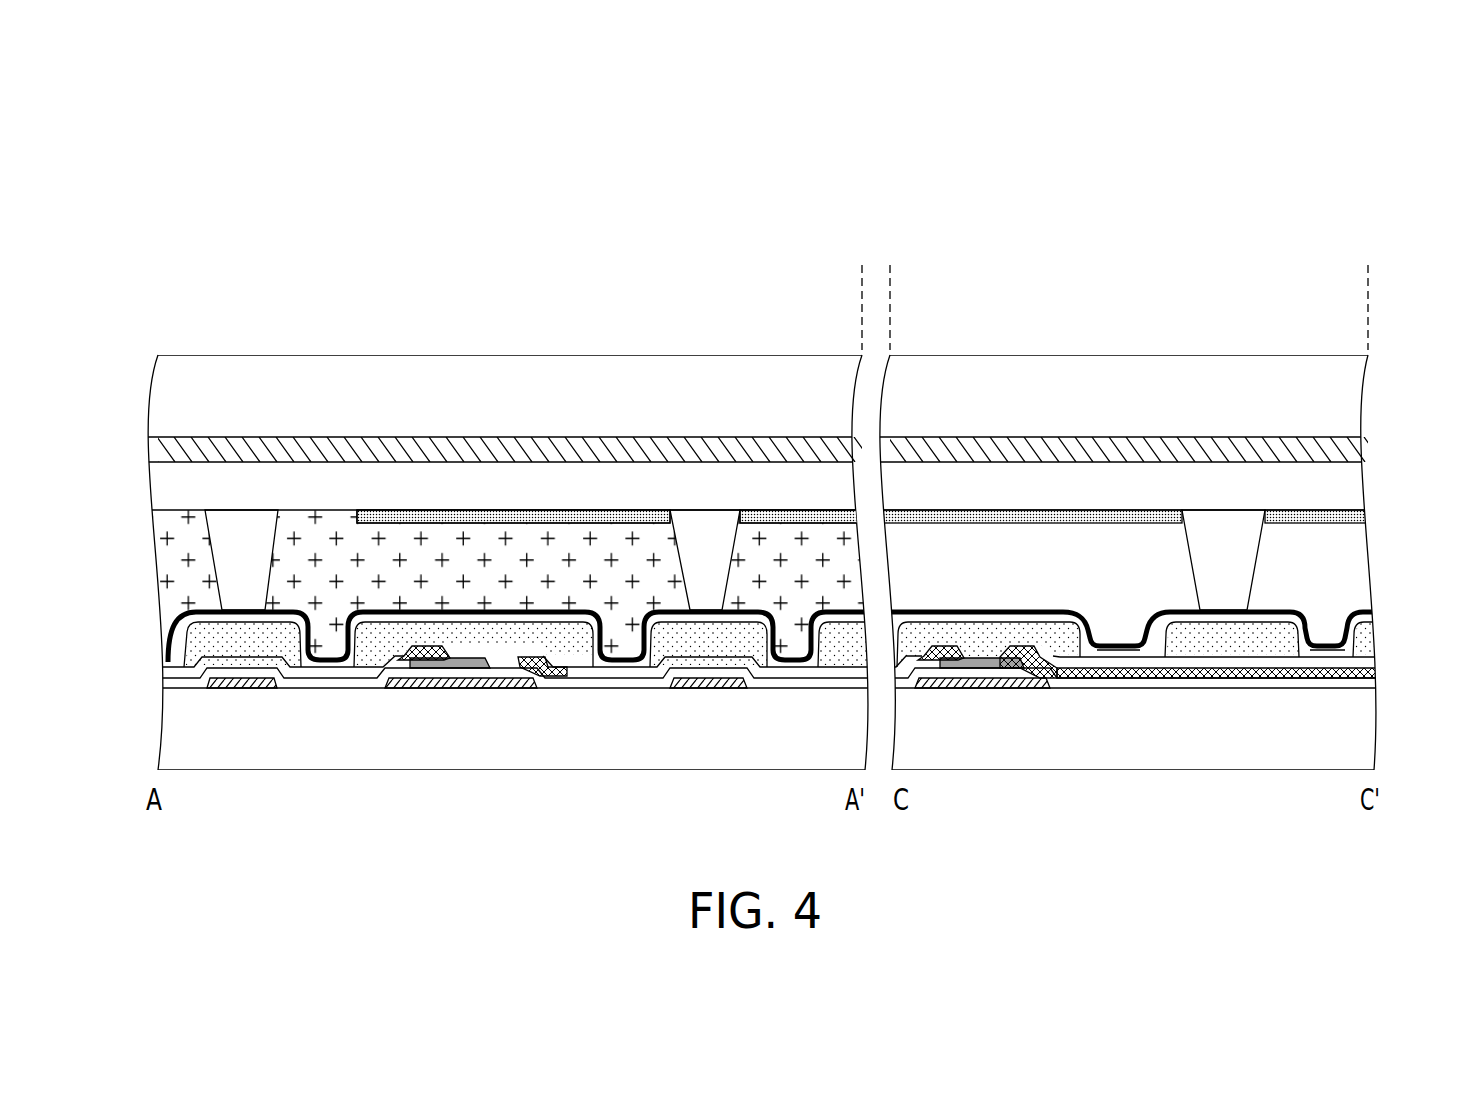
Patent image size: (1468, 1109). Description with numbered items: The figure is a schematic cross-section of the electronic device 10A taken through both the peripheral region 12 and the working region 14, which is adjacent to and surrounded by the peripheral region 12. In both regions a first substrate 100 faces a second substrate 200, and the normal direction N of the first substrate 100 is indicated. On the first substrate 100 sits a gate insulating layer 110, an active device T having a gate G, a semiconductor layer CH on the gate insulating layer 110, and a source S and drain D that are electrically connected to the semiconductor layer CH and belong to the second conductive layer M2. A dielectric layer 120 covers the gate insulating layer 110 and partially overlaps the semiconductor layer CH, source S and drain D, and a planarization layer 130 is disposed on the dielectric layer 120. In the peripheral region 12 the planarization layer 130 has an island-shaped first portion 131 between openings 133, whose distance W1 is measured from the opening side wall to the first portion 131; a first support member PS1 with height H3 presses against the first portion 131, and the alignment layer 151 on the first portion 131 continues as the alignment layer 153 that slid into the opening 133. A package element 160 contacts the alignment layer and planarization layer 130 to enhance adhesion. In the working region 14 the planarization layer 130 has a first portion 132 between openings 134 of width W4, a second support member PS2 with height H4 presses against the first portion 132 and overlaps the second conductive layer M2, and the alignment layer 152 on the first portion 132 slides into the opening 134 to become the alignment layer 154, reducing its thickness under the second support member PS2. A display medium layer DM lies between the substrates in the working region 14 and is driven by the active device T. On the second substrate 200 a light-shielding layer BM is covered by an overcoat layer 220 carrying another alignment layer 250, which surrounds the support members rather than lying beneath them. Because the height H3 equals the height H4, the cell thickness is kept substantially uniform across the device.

The electronic device 10A is at (1415, 879).
The peripheral region 12 is at (860, 293).
The working region 14 is at (1366, 293).
The first substrate 100 is at (173, 713).
The gate insulating layer 110 is at (1374, 682).
The dielectric layer 120 is at (1372, 664).
The planarization layer 130 is at (1408, 624).
The first portion 131 is at (268, 640).
The first portion 132 is at (1203, 650).
The opening 133 is at (173, 630).
The opening 134 is at (1331, 618).
The alignment layer 151 is at (276, 606).
The alignment layer 152 is at (1180, 606).
The alignment layer 153 is at (332, 662).
The alignment layer 154 is at (1316, 654).
The package element 160 is at (173, 562).
The second substrate 200 is at (1345, 400).
The overcoat layer 220 is at (1345, 483).
The another alignment layer 250 is at (1350, 516).
The light-shielding layer BM is at (1345, 450).
The first support member PS1 is at (223, 523).
The second support member PS2 is at (1243, 553).
The display medium layer DM is at (928, 548).
The active device T is at (410, 848).
The source S is at (427, 650).
The drain D is at (553, 672).
The semiconductor layer CH is at (452, 662).
The gate G is at (507, 683).
The second conductive layer M2 is at (1249, 674).
The height H3 is at (255, 513).
The height H4 is at (1213, 513).
The distance W1 is at (596, 672).
The width W4 is at (1084, 662).
The normal direction N is at (1395, 122).